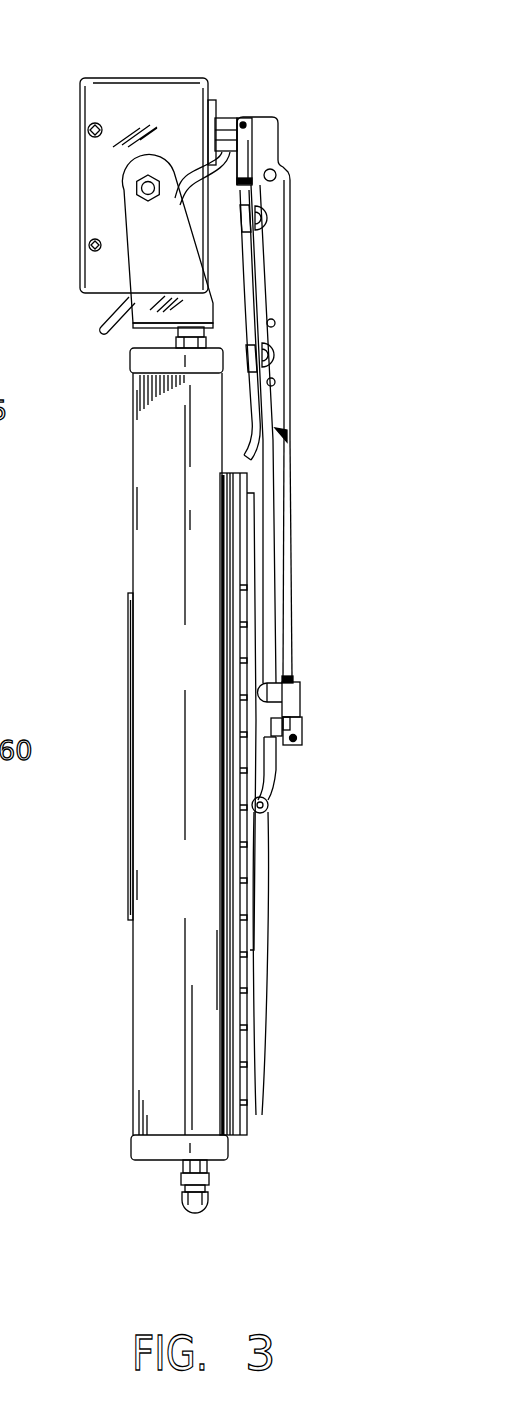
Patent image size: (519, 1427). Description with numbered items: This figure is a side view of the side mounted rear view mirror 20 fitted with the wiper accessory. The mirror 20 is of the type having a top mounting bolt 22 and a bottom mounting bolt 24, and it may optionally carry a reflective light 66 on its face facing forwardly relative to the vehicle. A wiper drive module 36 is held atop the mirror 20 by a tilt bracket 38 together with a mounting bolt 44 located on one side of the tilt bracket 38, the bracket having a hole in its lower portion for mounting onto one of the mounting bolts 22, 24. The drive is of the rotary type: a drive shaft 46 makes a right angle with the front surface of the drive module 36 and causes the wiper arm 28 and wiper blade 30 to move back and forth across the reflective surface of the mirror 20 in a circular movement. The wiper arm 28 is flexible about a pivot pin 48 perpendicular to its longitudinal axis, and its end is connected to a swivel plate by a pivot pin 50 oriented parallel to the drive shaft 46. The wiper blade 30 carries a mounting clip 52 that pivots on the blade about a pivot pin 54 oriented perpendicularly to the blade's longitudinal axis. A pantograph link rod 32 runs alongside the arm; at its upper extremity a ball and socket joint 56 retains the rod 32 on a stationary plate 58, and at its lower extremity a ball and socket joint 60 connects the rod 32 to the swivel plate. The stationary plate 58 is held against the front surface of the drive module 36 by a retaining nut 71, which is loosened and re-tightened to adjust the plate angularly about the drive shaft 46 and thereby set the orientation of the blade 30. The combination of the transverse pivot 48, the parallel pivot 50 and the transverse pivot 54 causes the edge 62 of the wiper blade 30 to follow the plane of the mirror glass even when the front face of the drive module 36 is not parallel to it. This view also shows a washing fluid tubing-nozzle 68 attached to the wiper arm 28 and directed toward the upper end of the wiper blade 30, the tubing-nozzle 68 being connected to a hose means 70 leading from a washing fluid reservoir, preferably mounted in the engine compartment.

The rear view mirror 20 is at (152, 540).
The top mounting bolt 22 is at (175, 337).
The bottom mounting bolt 24 is at (175, 1178).
The wiper arm 28 is at (290, 310).
The wiper blade 30 is at (272, 885).
The pantograph link rod 32 is at (256, 258).
The wiper drive module 36 is at (130, 80).
The tilt bracket 38 is at (138, 260).
The mounting bolt 44 is at (135, 188).
The drive shaft 46 is at (255, 112).
The pivot pin 48 is at (276, 173).
The pivot pin 50 is at (287, 678).
The mounting clip 52 is at (276, 767).
The pivot pin 54 is at (266, 809).
The ball and socket joint 56 is at (253, 140).
The stationary plate 58 is at (208, 118).
The ball and socket joint 60 is at (302, 703).
The edge of wiper blade 62 is at (228, 1035).
The reflective light 66 is at (128, 840).
The washing fluid tubing-nozzle 68 is at (256, 430).
The hose means 70 is at (100, 323).
The retaining nut 71 is at (225, 115).